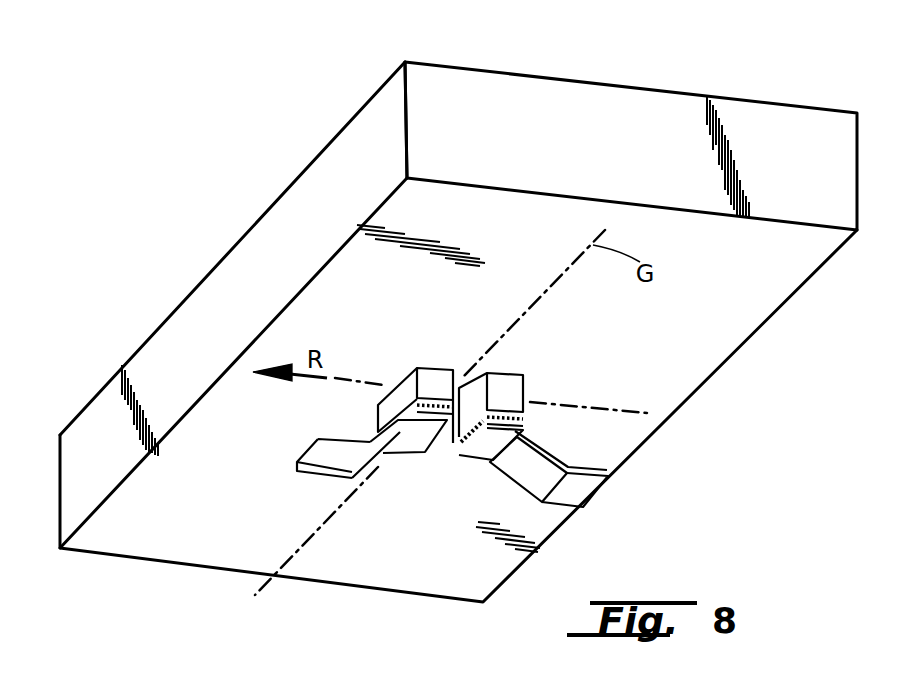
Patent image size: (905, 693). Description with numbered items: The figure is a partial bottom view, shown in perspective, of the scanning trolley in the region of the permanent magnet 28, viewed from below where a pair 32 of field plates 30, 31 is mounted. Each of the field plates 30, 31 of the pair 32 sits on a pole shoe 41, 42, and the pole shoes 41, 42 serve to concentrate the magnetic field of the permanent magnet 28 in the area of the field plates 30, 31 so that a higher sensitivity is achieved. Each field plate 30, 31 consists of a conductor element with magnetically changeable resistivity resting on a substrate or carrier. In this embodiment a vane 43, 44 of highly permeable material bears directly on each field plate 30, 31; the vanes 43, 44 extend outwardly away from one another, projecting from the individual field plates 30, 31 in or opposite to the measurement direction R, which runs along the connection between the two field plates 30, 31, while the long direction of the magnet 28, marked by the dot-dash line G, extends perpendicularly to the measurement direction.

The permanent magnet 28 is at (480, 93).
The field plate 30 is at (435, 402).
The field plate 31 is at (525, 403).
The pair of field plates 32 is at (432, 503).
The pole shoe 41 is at (423, 370).
The pole shoe 42 is at (500, 382).
The vane 43 is at (315, 470).
The vane 44 is at (585, 495).